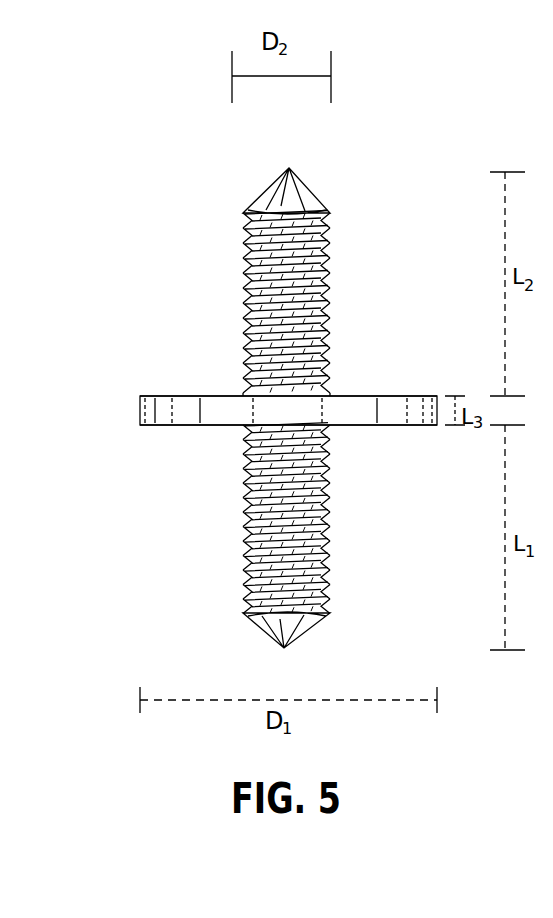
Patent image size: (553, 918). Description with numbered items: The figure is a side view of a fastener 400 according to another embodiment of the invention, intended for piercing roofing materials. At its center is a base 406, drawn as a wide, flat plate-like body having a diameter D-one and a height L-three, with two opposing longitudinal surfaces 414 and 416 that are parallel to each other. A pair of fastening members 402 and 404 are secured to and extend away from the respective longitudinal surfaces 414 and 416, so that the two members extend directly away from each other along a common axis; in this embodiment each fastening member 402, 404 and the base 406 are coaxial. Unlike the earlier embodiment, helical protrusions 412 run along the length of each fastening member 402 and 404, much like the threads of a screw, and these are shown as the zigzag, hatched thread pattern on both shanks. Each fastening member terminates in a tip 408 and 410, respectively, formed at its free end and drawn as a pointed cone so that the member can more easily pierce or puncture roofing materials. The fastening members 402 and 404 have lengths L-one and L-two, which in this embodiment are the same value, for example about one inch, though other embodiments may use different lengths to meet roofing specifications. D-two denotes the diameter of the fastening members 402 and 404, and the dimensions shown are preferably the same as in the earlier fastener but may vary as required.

The fastener 400 is at (290, 411).
The fastening member 402 is at (323, 540).
The fastening member 404 is at (286, 302).
The base 406 is at (290, 414).
The tip 408 is at (303, 619).
The tip 410 is at (257, 186).
The helical protrusions 412 is at (237, 283).
The longitudinal surface 414 is at (154, 421).
The longitudinal surface 416 is at (157, 383).